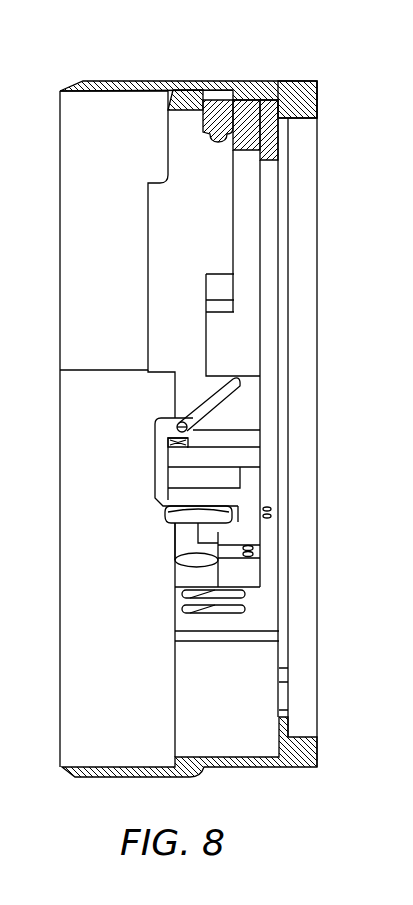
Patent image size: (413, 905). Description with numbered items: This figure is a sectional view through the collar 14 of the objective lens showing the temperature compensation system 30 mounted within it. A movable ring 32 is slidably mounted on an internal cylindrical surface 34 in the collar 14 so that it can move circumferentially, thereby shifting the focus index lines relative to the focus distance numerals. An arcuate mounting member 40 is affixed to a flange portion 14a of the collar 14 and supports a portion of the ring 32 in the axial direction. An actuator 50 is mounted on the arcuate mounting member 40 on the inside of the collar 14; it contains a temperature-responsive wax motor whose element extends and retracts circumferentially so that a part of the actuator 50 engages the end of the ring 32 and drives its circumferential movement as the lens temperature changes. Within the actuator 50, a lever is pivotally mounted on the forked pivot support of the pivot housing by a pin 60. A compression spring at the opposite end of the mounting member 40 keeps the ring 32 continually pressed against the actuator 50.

The temperature compensation system 30 is at (283, 47).
The collar 14 is at (238, 760).
The flange portion 14a is at (288, 127).
The arcuate mounting member 40 is at (260, 191).
The movable ring 32 is at (232, 104).
The internal cylindrical surface 34 is at (183, 108).
The actuator 50 is at (144, 464).
The pin 60 is at (182, 543).